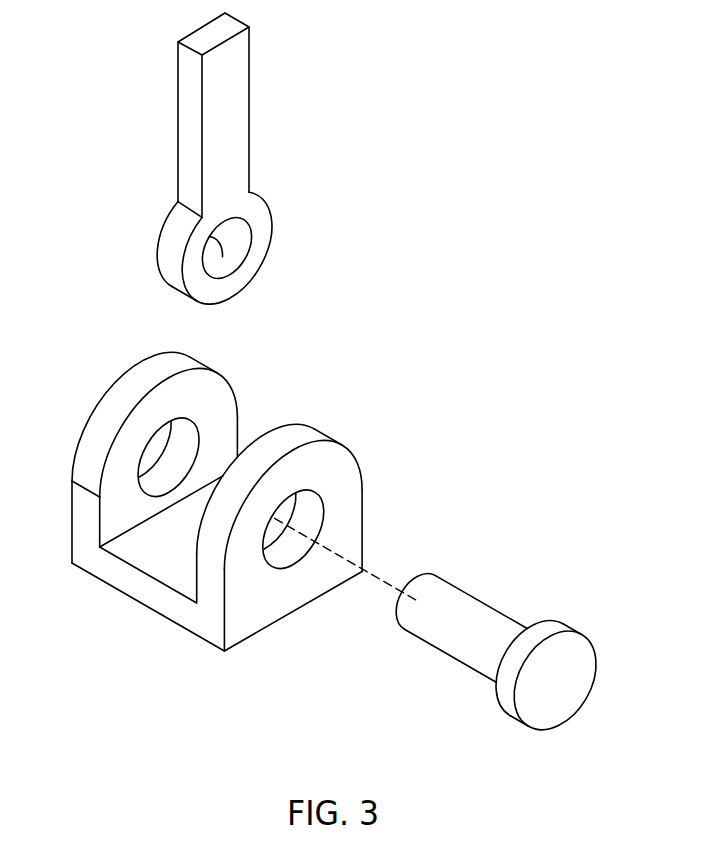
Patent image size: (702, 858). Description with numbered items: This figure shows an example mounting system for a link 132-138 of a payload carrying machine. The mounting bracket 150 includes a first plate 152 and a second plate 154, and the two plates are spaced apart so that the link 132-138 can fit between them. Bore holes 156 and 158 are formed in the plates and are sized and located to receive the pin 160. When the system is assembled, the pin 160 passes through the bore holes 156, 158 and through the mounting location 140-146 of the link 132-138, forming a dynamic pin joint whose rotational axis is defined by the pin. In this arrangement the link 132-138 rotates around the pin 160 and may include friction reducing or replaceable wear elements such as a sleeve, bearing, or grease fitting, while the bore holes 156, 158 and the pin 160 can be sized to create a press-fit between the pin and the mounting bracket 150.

The link 132-138 is at (237, 115).
The mounting location 140-146 is at (250, 232).
The mounting bracket 150 is at (334, 383).
The first plate 152 is at (117, 493).
The second plate 154 is at (282, 593).
The bore hole 156 is at (318, 497).
The bore hole 158 is at (193, 421).
The pin 160 is at (480, 612).